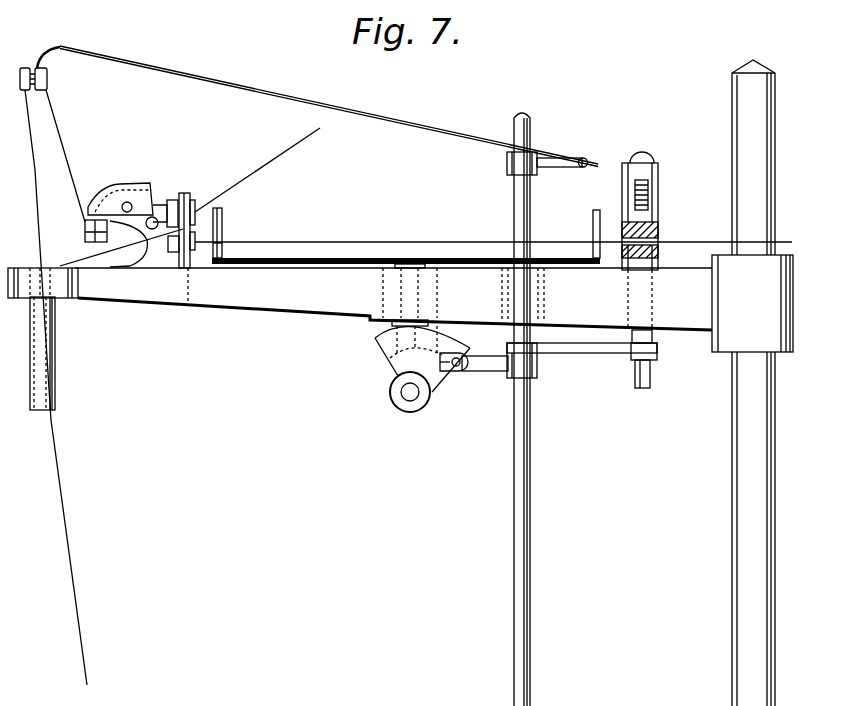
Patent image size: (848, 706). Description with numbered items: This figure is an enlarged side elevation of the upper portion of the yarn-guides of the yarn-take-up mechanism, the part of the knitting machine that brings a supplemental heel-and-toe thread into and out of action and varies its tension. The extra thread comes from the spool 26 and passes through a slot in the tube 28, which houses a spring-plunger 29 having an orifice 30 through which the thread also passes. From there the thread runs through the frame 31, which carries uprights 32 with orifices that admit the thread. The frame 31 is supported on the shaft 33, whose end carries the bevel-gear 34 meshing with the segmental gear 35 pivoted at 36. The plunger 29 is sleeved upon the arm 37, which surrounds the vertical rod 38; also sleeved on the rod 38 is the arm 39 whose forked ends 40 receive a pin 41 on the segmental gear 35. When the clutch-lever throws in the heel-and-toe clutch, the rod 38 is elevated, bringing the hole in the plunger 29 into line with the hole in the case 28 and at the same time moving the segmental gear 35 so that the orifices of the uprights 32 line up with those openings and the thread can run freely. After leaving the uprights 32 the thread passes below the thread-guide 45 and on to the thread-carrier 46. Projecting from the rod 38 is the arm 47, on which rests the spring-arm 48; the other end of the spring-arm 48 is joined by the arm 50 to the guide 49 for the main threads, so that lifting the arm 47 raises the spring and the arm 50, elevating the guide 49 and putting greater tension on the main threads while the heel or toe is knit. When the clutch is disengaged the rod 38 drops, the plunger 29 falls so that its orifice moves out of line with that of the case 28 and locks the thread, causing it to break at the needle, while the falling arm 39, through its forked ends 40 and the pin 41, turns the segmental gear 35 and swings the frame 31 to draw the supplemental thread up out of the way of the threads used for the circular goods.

The spool 26 is at (780, 250).
The tube 28 is at (660, 200).
The spring-plunger 29 is at (653, 291).
The orifice 30 is at (660, 232).
The frame 31 is at (470, 258).
The uprights 32 is at (223, 223).
The shaft 33 is at (410, 262).
The bevel-gear 34 is at (380, 342).
The segmental gear 35 is at (385, 360).
The pivot 36 is at (412, 398).
The arm 37 is at (633, 358).
The rod 38 is at (524, 503).
The arm 39 is at (505, 378).
The forked ends 40 is at (458, 356).
The pin 41 is at (455, 372).
The thread-guide 45 is at (194, 212).
The thread-carrier 46 is at (55, 405).
The arm 47 is at (558, 160).
The spring-arm 48 is at (463, 128).
The guide 49 is at (36, 66).
The arm 50 is at (70, 48).